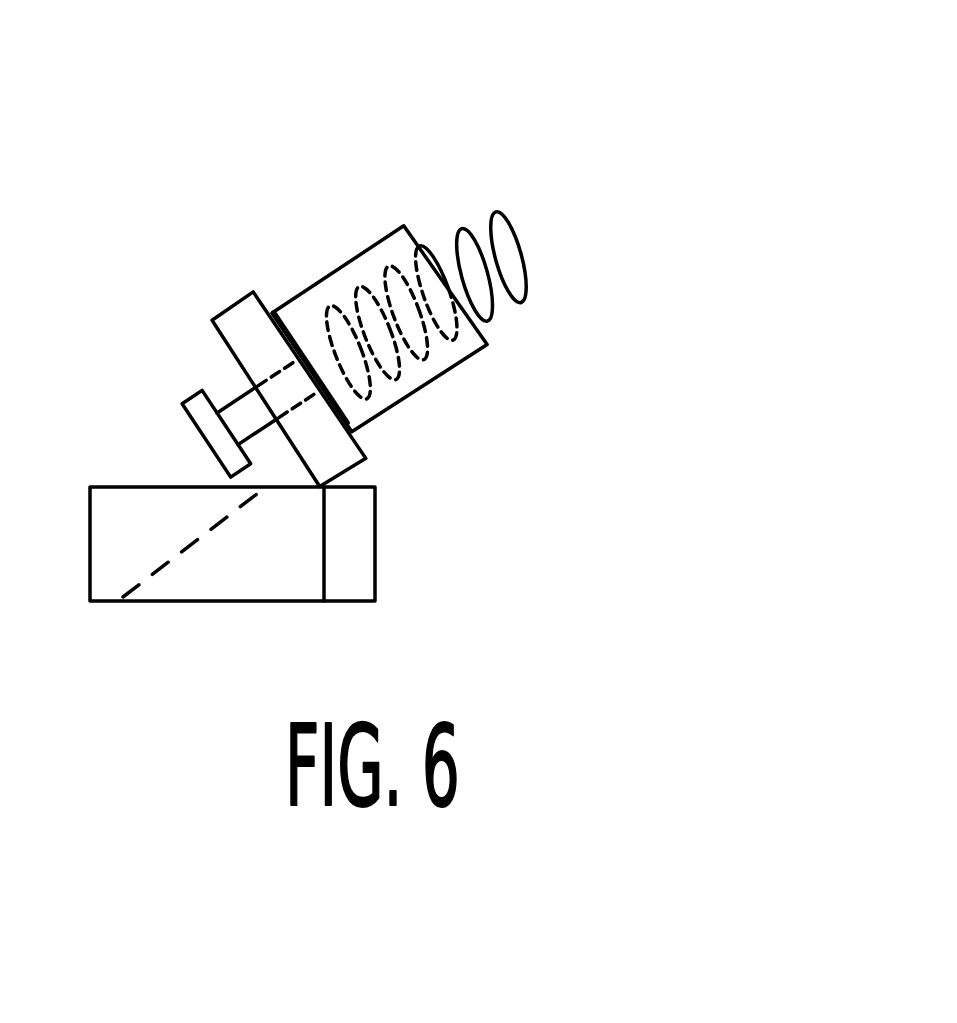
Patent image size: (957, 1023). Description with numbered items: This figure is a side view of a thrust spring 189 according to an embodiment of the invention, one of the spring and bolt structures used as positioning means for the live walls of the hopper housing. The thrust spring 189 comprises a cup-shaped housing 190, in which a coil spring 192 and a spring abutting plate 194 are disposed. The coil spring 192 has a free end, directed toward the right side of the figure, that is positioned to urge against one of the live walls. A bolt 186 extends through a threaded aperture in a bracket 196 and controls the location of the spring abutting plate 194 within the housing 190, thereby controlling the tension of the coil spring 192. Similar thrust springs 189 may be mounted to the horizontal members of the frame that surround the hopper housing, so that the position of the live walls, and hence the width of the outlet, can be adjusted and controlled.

The bolt 186 is at (186, 404).
The thrust spring 189 is at (611, 285).
The cup-shaped housing 190 is at (357, 257).
The coil spring 192 is at (515, 233).
The spring abutting plate 194 is at (293, 298).
The bracket 196 is at (228, 306).